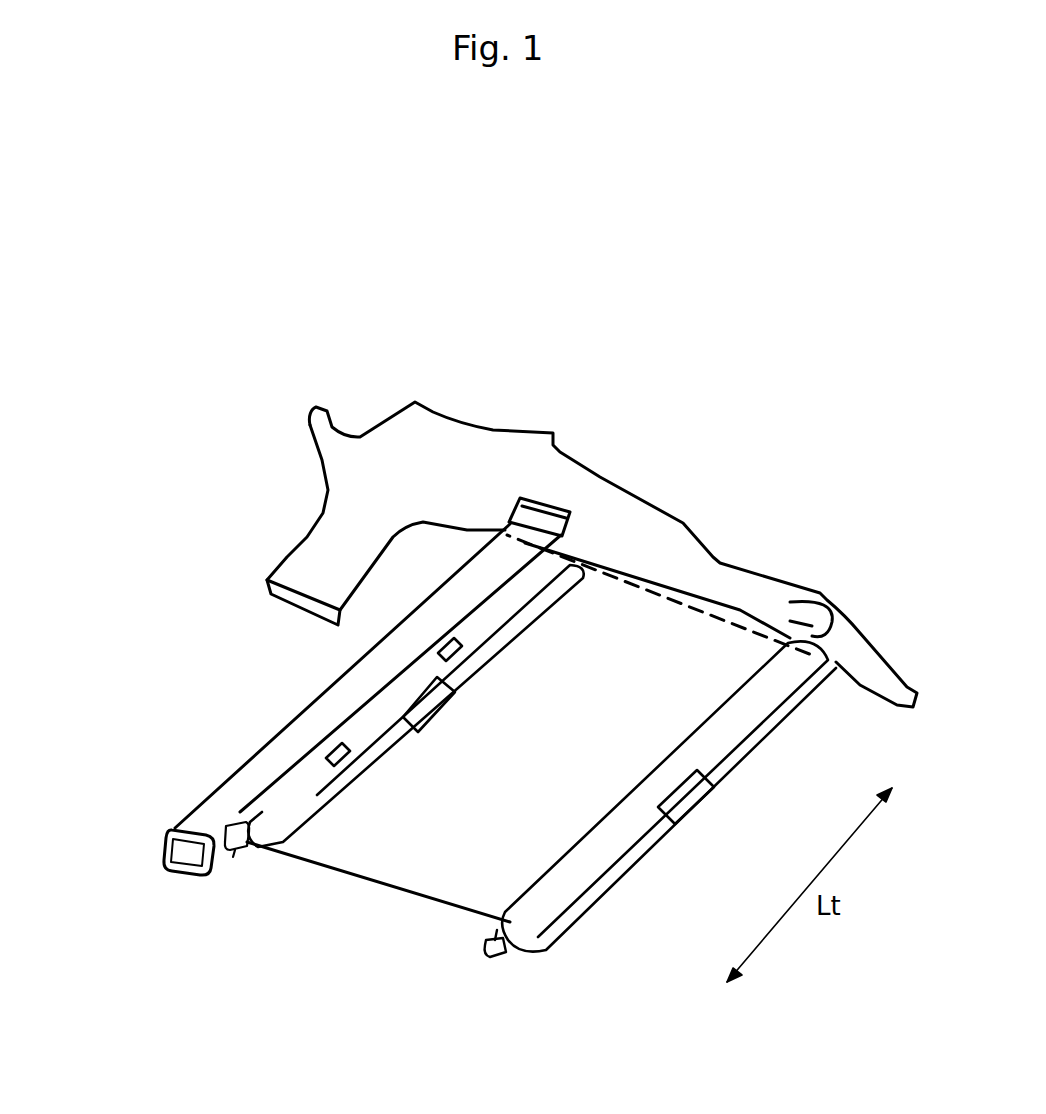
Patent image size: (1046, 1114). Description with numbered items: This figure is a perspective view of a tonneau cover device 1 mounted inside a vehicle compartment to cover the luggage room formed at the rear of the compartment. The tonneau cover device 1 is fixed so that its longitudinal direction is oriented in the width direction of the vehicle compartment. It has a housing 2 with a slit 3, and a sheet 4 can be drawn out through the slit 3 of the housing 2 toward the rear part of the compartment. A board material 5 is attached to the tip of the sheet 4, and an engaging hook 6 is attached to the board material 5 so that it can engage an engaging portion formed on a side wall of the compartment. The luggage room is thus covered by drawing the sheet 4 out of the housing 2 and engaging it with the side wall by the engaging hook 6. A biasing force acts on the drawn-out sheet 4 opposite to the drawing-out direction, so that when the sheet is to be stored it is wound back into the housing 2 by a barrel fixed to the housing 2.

The tonneau cover device 1 is at (453, 731).
The housing 2 is at (200, 823).
The slit 3 is at (280, 778).
The sheet 4 is at (573, 693).
The board material 5 is at (577, 877).
The engaging hook 6 is at (498, 953).